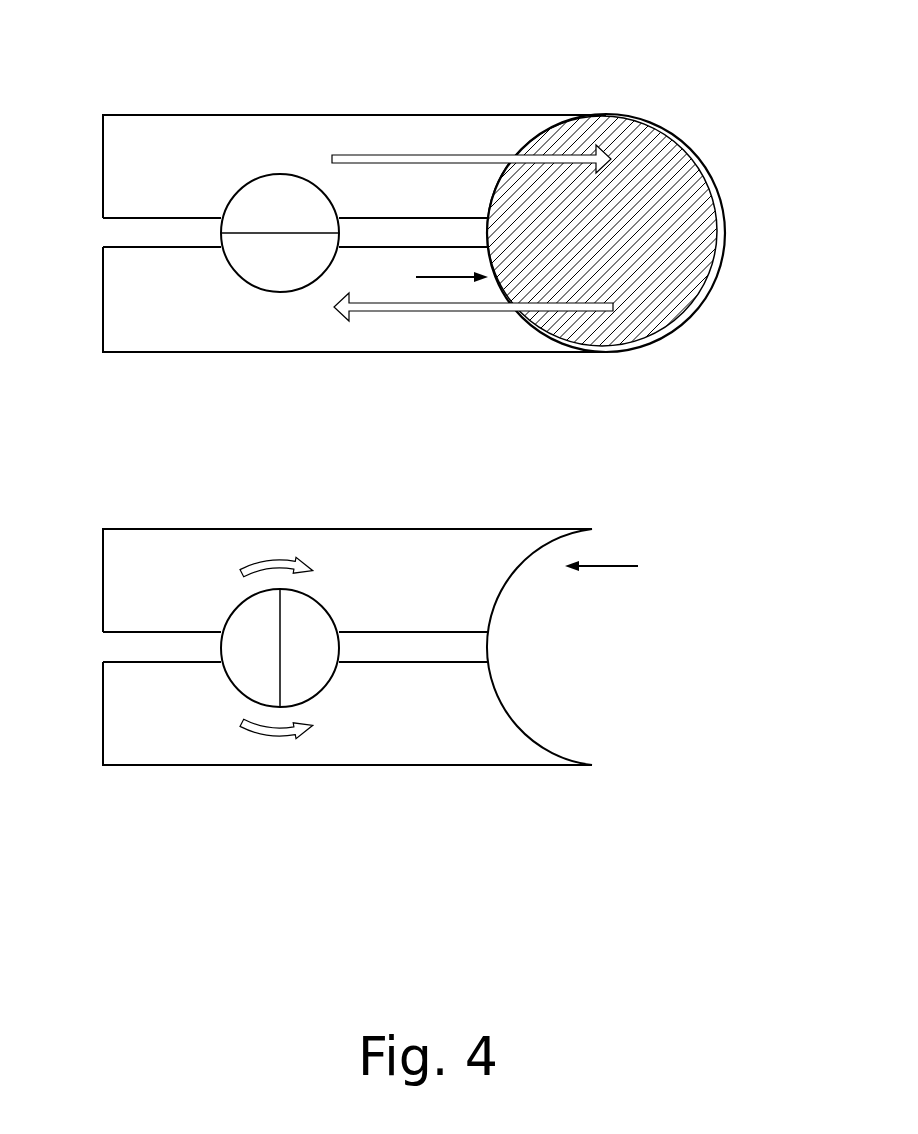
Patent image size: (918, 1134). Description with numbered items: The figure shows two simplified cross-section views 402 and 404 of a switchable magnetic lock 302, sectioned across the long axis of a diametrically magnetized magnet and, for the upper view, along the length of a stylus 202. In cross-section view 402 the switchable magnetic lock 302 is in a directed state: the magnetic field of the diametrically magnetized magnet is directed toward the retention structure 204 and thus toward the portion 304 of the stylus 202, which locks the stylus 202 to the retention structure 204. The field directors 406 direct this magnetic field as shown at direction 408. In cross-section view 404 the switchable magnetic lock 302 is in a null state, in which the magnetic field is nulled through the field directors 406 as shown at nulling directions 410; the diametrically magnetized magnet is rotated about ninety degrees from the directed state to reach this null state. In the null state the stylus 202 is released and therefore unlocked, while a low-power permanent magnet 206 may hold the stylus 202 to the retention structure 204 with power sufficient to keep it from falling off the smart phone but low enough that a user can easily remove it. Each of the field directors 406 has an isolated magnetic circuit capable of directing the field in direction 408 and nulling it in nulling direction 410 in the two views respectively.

The cross-section view 402 is at (159, 47).
The cross-section view 404 is at (159, 460).
The field directors 406 is at (133, 130).
The low-power permanent magnet 206 is at (237, 205).
The stylus 202 is at (685, 140).
The portion of stylus 304 is at (712, 193).
The switchable magnetic lock 302 is at (340, 328).
The direction 408 is at (457, 158).
The nulling directions 410 is at (278, 562).
The retention structure 204 is at (527, 422).